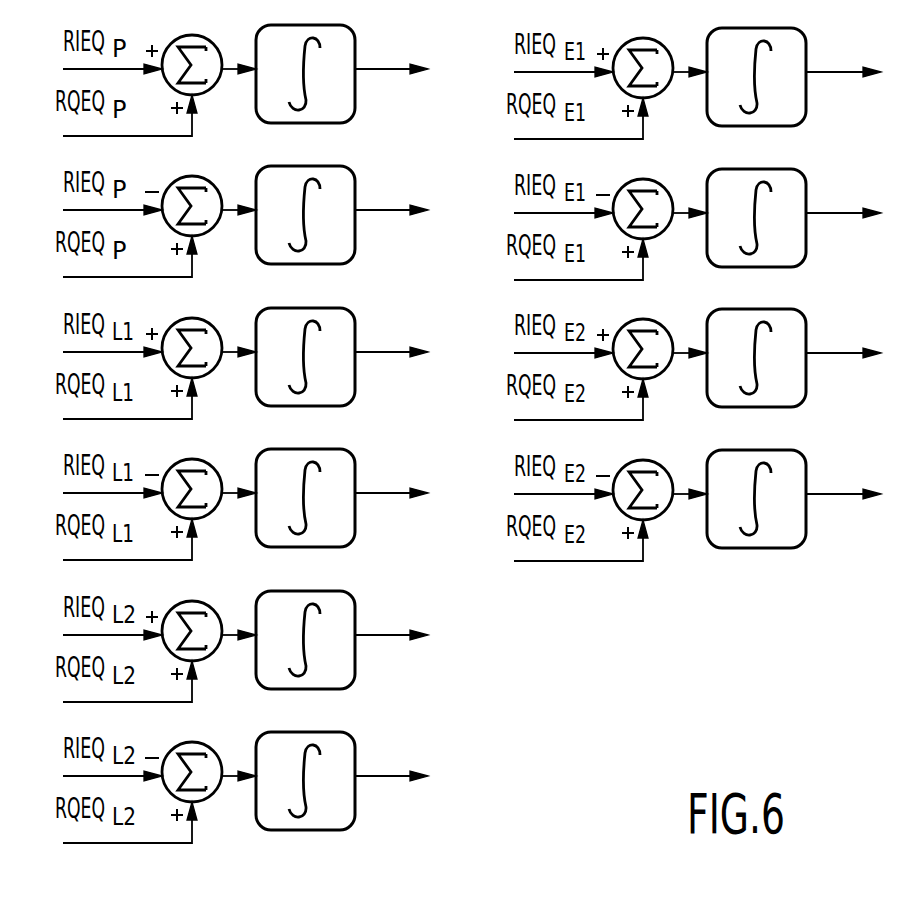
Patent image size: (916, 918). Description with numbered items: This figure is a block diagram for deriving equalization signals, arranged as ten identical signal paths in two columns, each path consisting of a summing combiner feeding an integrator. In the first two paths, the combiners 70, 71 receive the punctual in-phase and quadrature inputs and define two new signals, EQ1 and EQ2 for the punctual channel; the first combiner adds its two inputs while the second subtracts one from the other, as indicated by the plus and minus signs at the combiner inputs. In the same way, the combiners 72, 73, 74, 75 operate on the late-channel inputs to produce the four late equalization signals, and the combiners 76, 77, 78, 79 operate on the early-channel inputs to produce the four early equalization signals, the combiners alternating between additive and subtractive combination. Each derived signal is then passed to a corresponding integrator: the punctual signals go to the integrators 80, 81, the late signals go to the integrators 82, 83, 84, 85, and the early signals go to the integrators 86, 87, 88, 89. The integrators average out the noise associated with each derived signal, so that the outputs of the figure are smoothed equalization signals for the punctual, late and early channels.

The combiner 70 is at (208, 25).
The combiner 71 is at (225, 239).
The combiner 72 is at (225, 381).
The combiner 73 is at (225, 522).
The combiner 74 is at (225, 664).
The combiner 75 is at (225, 805).
The combiner 76 is at (676, 101).
The combiner 77 is at (676, 242).
The combiner 78 is at (676, 382).
The combiner 79 is at (676, 523).
The integrator 80 is at (355, 29).
The integrator 81 is at (344, 234).
The integrator 82 is at (344, 376).
The integrator 83 is at (344, 517).
The integrator 84 is at (344, 659).
The integrator 85 is at (344, 800).
The integrator 86 is at (795, 96).
The integrator 87 is at (795, 237).
The integrator 88 is at (795, 377).
The integrator 89 is at (795, 518).